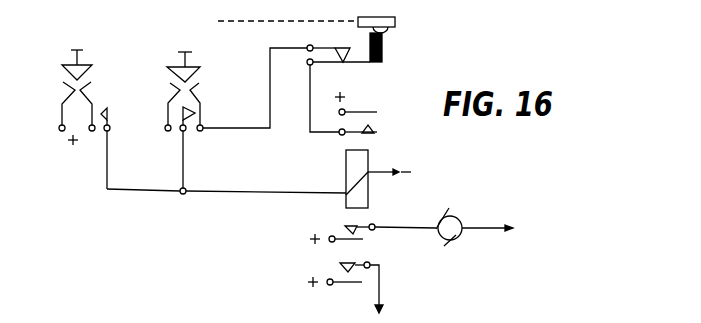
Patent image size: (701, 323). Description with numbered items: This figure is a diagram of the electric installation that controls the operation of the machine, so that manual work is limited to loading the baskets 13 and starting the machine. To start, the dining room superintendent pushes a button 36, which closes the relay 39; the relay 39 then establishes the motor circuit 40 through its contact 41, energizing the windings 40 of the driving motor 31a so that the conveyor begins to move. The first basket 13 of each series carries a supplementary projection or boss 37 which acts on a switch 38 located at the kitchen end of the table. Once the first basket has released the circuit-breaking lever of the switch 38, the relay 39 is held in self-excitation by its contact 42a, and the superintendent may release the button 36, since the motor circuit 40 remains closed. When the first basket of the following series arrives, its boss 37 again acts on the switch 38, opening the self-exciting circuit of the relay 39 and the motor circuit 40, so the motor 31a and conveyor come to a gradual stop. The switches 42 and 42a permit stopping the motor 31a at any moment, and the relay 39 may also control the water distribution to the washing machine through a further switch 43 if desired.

The basket 13 is at (396, 20).
The button 36 is at (83, 50).
The boss 37 is at (389, 31).
The switch 38 is at (388, 52).
The relay 39 is at (379, 179).
The motor circuit 40 is at (475, 235).
The driving motor 31a is at (456, 218).
The contact 41 is at (336, 228).
The switch 42 is at (185, 52).
The contact 42a is at (373, 108).
The switch 43 is at (324, 273).